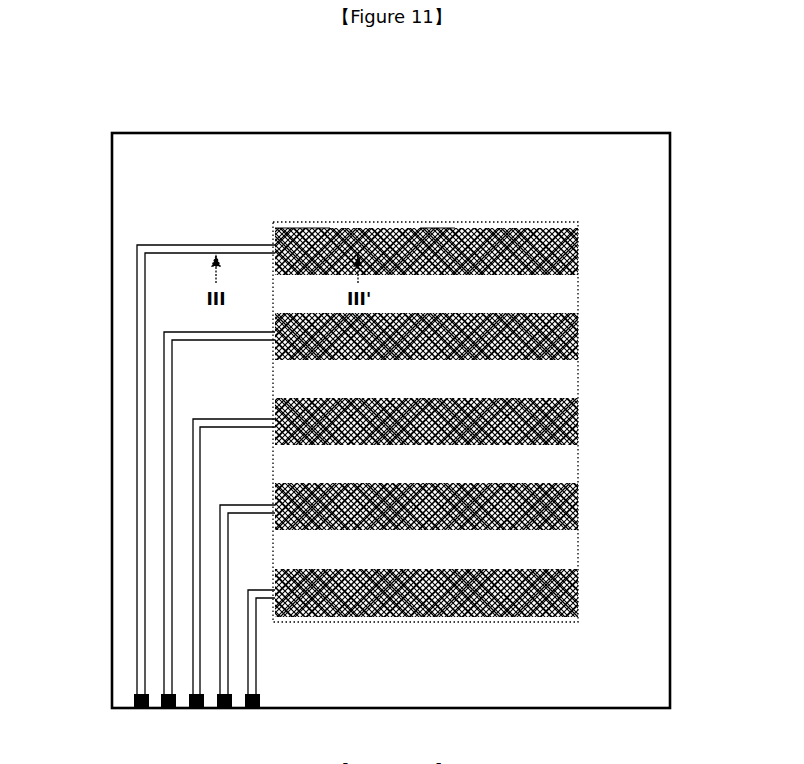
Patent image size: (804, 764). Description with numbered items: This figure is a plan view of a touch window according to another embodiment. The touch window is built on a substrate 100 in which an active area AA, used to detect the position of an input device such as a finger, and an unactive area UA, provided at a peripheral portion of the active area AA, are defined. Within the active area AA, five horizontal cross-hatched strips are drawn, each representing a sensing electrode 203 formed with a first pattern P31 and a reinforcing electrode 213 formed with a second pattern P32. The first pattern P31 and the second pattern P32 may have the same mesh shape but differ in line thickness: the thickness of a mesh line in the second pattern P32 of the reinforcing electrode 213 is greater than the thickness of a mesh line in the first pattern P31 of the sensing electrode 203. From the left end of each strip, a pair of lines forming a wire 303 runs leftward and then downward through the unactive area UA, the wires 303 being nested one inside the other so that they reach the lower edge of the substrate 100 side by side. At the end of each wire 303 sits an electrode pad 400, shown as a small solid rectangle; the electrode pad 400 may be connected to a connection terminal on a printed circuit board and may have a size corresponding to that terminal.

The substrate 100 is at (249, 193).
The unactive area UA is at (652, 177).
The active area AA is at (565, 290).
The sensing electrode 203 is at (510, 228).
The reinforcing electrode 213 is at (292, 228).
The second pattern P32 is at (315, 228).
The first pattern P31 is at (437, 228).
The wire 303 is at (136, 293).
The electrode pad 400 is at (134, 697).